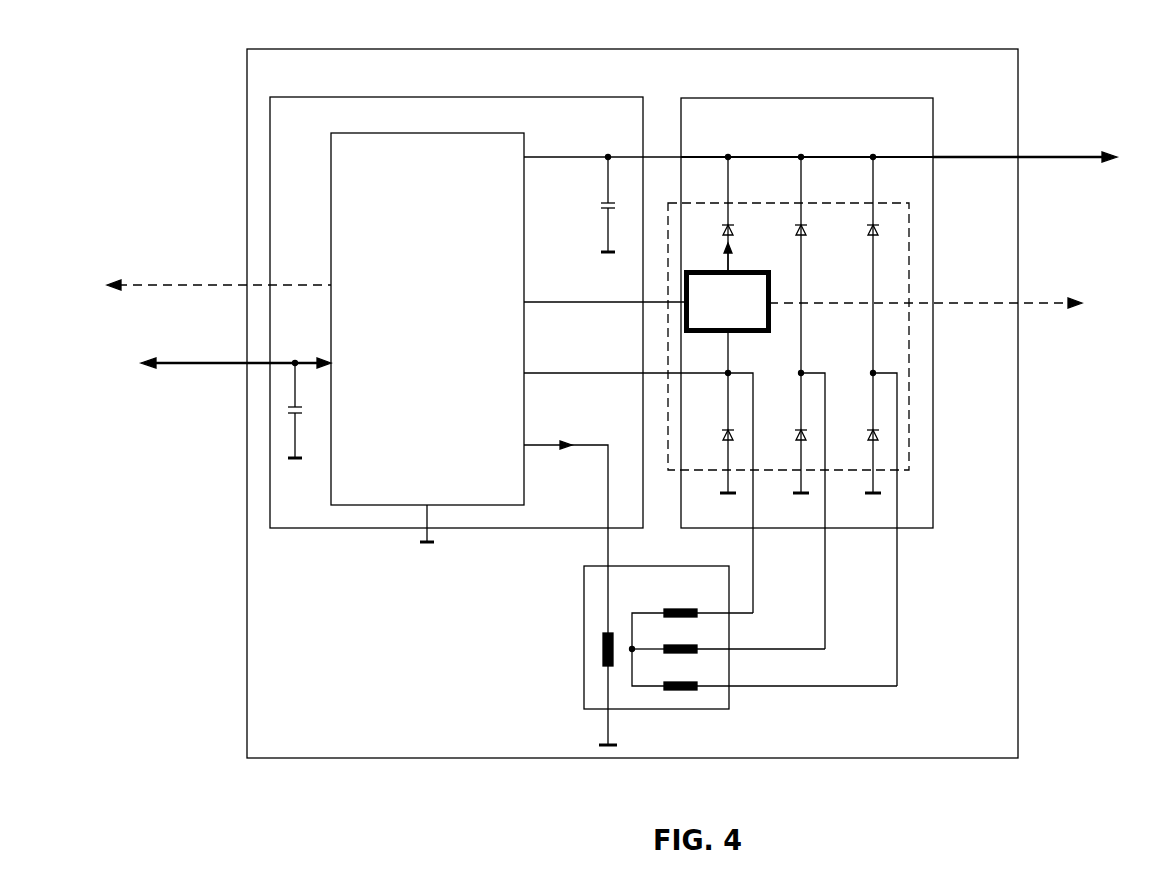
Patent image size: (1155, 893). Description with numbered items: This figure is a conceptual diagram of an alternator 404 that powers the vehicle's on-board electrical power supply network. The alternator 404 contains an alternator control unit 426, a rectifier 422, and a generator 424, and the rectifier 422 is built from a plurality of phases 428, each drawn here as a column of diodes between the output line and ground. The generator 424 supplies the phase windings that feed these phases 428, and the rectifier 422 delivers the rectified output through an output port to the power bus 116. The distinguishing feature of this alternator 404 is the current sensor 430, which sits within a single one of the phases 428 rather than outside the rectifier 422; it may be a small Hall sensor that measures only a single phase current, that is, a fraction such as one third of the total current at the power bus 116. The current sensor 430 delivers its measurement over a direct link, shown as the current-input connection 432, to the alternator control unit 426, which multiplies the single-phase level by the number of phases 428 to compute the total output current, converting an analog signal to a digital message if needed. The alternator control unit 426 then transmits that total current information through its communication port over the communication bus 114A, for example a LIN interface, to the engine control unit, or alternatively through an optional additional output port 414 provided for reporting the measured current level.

The alternator 404 is at (713, 78).
The alternator control unit 426 is at (588, 122).
The rectifier 422 is at (886, 139).
The plurality of phases 428 is at (909, 376).
The current sensor 430 is at (746, 311).
The generator 424 is at (712, 598).
The current input line 432 is at (575, 302).
The additional output port 414 is at (170, 285).
The communication bus 114A is at (178, 362).
The power bus 116 is at (1042, 157).